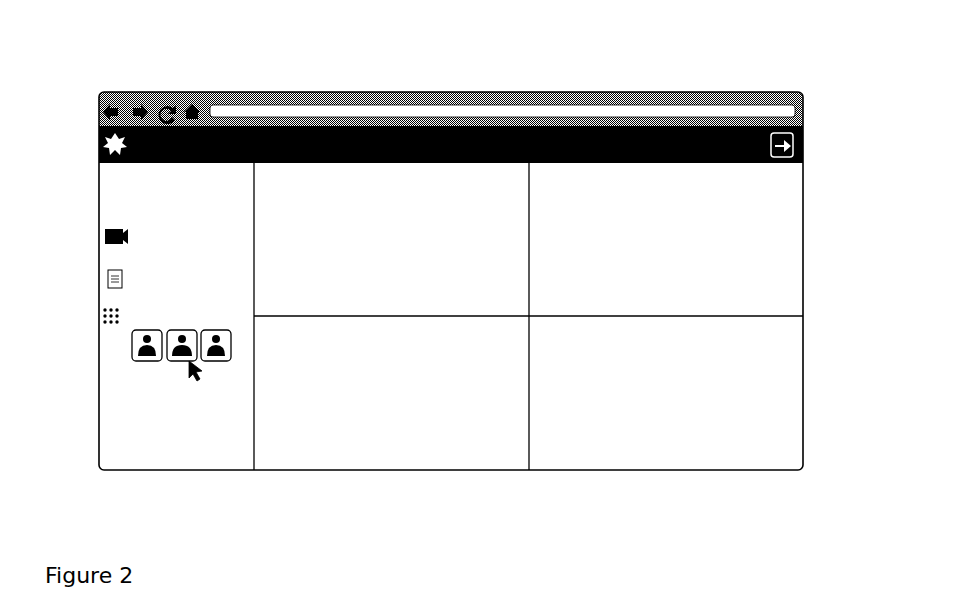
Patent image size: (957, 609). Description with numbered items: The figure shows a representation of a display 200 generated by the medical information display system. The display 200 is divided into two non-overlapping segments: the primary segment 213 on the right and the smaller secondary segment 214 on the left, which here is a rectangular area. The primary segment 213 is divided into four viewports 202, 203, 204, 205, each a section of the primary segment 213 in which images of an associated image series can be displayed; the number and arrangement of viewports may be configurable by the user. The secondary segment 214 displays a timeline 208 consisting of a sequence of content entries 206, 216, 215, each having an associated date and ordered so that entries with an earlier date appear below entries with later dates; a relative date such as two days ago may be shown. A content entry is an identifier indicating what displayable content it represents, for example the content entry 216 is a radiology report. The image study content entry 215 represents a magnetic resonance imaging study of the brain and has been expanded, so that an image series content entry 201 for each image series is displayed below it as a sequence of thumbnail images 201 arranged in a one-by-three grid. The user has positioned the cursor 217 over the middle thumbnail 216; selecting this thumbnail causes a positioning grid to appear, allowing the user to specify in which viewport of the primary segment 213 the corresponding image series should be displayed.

The display 200 is at (646, 91).
The image series content entry 201 is at (124, 346).
The viewport 202 is at (302, 296).
The viewport 203 is at (577, 296).
The viewport 204 is at (302, 445).
The viewport 205 is at (577, 445).
The content entry 206 is at (145, 226).
The timeline 208 is at (235, 197).
The primary segment 213 is at (803, 474).
The secondary segment 214 is at (252, 474).
The image study content entry 215 is at (142, 318).
The content entry / thumbnail 216 is at (143, 277).
The cursor 217 is at (190, 369).